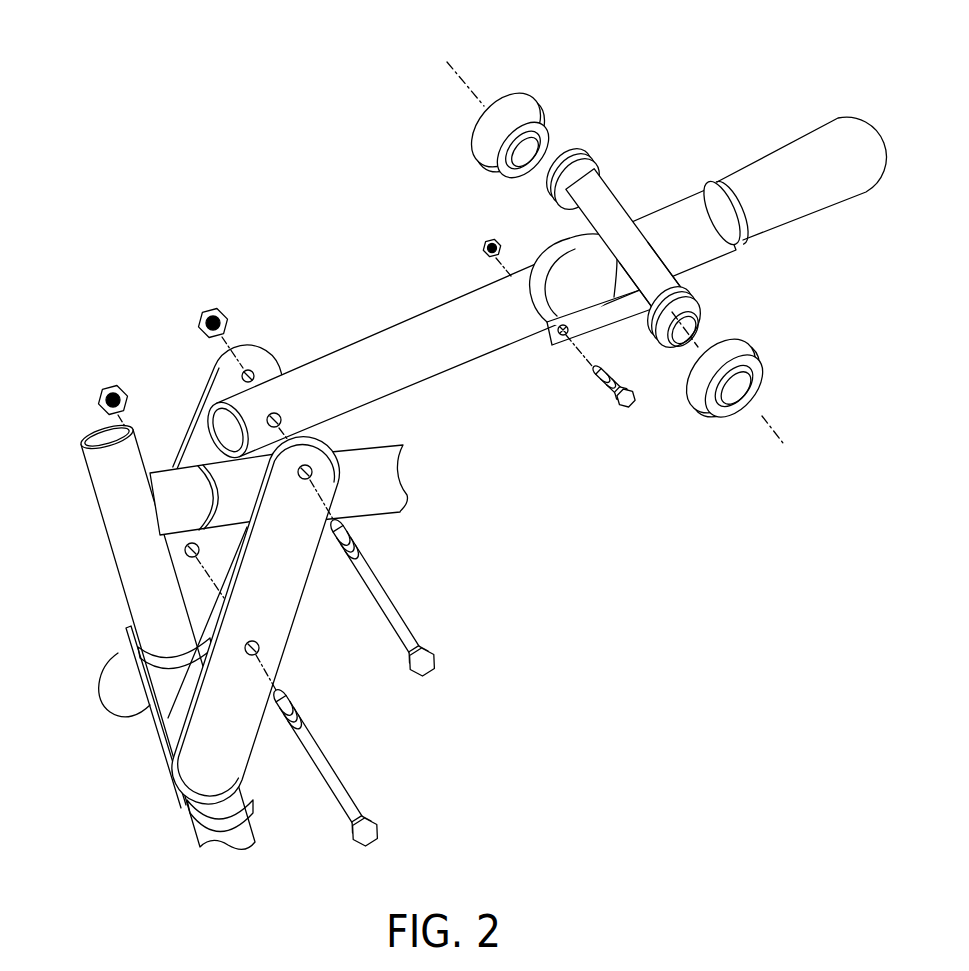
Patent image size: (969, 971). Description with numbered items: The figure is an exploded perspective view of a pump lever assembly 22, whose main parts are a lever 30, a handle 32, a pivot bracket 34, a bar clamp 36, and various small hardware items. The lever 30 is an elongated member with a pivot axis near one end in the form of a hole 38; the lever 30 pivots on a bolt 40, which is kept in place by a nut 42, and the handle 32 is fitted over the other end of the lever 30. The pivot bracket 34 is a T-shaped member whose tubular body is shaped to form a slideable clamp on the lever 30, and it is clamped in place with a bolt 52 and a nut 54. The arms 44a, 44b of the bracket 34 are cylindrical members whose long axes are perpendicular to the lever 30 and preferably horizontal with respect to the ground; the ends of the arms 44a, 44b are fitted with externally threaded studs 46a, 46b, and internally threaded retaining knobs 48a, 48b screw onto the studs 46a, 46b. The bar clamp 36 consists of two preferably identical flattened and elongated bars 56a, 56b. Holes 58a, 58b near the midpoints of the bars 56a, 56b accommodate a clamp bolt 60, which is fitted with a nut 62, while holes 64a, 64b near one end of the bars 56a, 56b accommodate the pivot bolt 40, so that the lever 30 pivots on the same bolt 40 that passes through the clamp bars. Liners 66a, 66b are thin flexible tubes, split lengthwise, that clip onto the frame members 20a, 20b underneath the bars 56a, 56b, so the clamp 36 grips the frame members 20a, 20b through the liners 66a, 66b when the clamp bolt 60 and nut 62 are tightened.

The frame member 20a is at (207, 828).
The frame member 20b is at (380, 482).
The lever assembly 22 is at (337, 152).
The lever 30 is at (427, 330).
The handle 32 is at (800, 137).
The pivot bracket 34 is at (573, 257).
The bar clamp 36 is at (410, 712).
The hole 38 is at (282, 418).
The bolt 40 is at (383, 593).
The nut 42 is at (200, 320).
The arm 44a is at (663, 283).
The arm 44b is at (590, 198).
The externally threaded stud 46a is at (693, 302).
The externally threaded stud 46b is at (567, 170).
The retaining knob 48a is at (737, 352).
The retaining knob 48b is at (510, 117).
The bolt 52 is at (628, 404).
The nut 54 is at (483, 243).
The bar 56a is at (220, 782).
The bar 56b is at (130, 670).
The hole 58a is at (260, 650).
The hole 58b is at (198, 540).
The clamp bolt 60 is at (337, 787).
The nut 62 is at (100, 395).
The hole 64a is at (313, 478).
The hole 64b is at (242, 372).
The liner 66a is at (333, 515).
The liner 66b is at (167, 690).